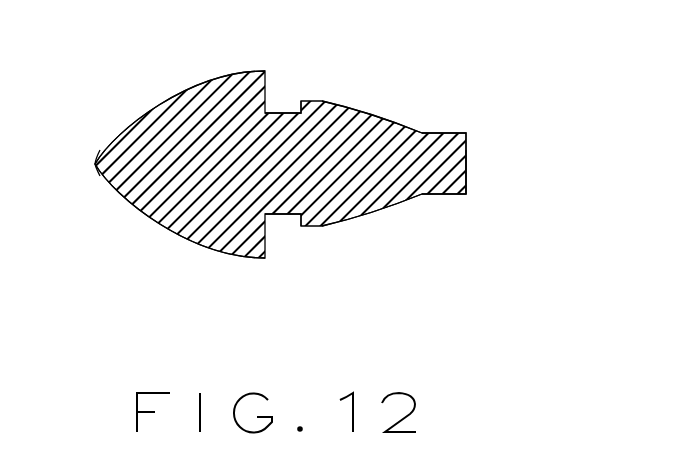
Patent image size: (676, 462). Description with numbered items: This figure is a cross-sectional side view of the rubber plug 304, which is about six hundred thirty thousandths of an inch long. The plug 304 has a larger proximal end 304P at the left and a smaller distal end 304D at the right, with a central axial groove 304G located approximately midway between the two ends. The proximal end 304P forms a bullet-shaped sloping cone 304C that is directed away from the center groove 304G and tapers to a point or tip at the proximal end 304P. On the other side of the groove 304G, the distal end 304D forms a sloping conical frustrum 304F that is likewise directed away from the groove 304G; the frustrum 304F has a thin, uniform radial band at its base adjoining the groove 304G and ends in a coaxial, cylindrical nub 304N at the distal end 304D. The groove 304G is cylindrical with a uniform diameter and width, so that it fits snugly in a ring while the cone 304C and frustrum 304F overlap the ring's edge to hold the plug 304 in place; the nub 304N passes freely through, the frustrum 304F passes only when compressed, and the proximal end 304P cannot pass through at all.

The rubber plug 304 is at (145, 237).
The proximal end 304P is at (93, 161).
The sloping cone 304C is at (195, 217).
The central axial groove 304G is at (283, 232).
The sloping conical frustrum 304F is at (362, 181).
The distal end 304D is at (485, 161).
The cylindrical nub 304N is at (467, 182).